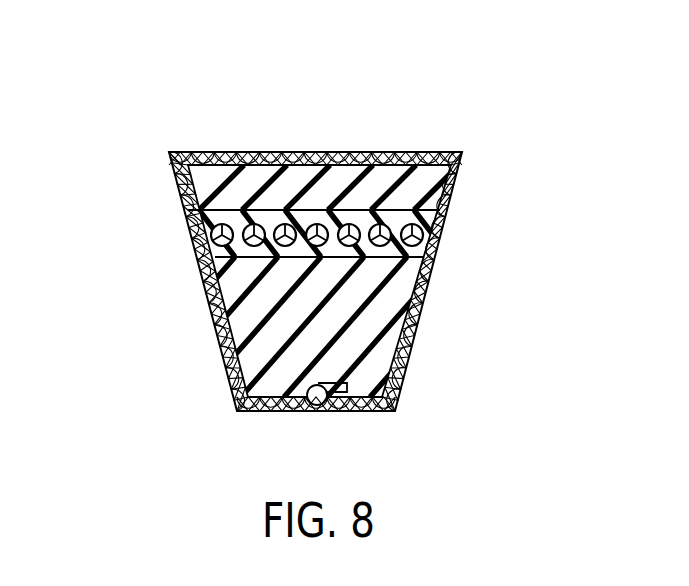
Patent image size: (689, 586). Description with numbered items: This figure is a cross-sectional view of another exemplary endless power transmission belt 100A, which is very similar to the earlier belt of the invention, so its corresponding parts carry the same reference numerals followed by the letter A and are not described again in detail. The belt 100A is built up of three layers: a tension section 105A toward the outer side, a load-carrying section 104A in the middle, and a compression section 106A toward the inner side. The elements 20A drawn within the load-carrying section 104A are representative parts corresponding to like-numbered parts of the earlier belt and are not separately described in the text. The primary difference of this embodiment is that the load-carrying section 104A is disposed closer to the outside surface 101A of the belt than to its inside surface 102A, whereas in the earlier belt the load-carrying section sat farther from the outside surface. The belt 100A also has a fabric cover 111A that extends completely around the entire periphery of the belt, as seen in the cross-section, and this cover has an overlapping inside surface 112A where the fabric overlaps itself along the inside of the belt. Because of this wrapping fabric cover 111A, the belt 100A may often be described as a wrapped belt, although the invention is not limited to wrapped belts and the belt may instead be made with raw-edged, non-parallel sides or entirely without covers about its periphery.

The belt 100A is at (381, 96).
The outside surface 101A is at (248, 152).
The fabric cover 111A is at (405, 152).
The tension section 105A is at (470, 184).
The load-carrying section 104A is at (457, 236).
The tension cords 20A is at (211, 238).
The compression section 106A is at (429, 332).
The overlapping inside surface 112A is at (315, 420).
The inside surface 102A is at (368, 414).